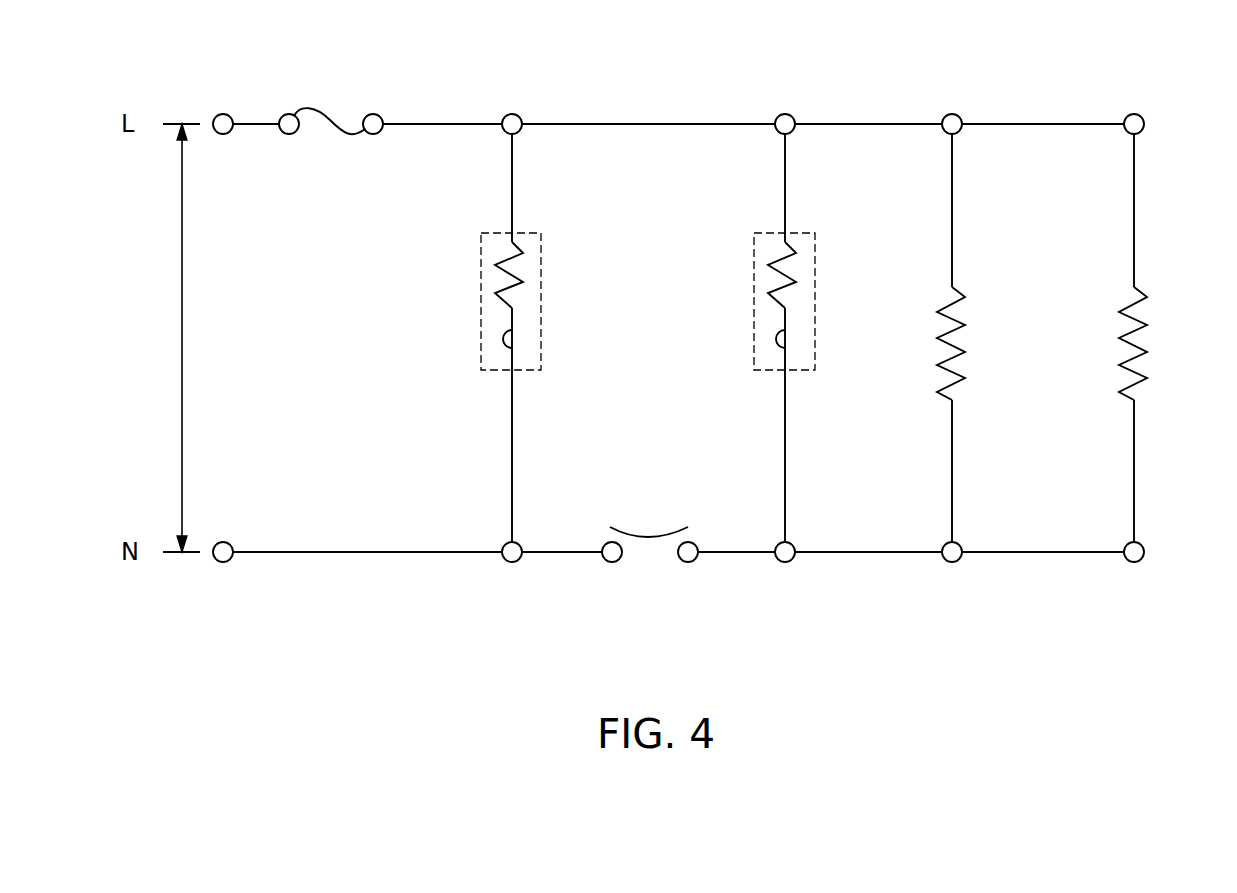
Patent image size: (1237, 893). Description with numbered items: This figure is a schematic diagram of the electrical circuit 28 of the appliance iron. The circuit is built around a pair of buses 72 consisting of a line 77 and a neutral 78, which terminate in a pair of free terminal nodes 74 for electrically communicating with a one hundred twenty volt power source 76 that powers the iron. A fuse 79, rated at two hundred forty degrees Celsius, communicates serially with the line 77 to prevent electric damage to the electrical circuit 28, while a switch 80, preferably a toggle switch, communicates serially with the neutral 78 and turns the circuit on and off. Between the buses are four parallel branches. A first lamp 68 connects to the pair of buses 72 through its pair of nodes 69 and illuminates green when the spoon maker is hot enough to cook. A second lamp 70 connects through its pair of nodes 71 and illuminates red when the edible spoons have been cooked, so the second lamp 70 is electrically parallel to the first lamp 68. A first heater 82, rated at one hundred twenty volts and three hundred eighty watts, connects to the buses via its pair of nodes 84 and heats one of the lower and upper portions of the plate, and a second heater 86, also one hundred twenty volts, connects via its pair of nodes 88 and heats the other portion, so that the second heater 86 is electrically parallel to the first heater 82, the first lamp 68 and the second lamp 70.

The electrical circuit 28 is at (620, 124).
The first lamp 68 is at (753, 245).
The nodes 69 is at (776, 116).
The second lamp 70 is at (480, 245).
The nodes 71 is at (515, 125).
The buses 72 is at (255, 125).
The free terminal nodes 74 is at (217, 117).
The 120V power source 76 is at (182, 433).
The line 77 is at (862, 124).
The neutral 78 is at (862, 552).
The fuse 79 is at (348, 134).
The switch 80 is at (637, 537).
The first heater 82 is at (1144, 289).
The nodes 84 is at (1126, 118).
The second heater 86 is at (962, 288).
The nodes 88 is at (953, 125).